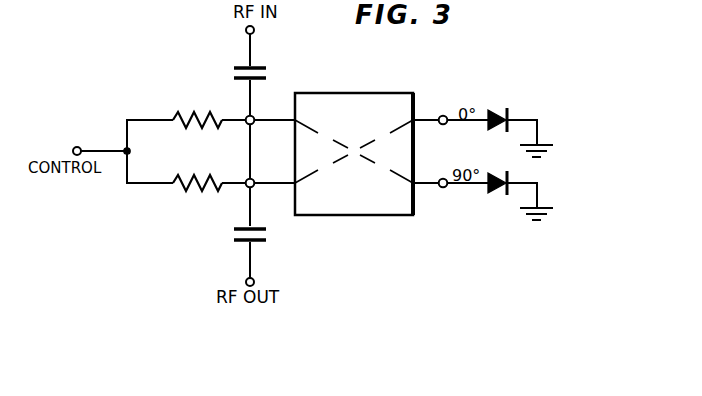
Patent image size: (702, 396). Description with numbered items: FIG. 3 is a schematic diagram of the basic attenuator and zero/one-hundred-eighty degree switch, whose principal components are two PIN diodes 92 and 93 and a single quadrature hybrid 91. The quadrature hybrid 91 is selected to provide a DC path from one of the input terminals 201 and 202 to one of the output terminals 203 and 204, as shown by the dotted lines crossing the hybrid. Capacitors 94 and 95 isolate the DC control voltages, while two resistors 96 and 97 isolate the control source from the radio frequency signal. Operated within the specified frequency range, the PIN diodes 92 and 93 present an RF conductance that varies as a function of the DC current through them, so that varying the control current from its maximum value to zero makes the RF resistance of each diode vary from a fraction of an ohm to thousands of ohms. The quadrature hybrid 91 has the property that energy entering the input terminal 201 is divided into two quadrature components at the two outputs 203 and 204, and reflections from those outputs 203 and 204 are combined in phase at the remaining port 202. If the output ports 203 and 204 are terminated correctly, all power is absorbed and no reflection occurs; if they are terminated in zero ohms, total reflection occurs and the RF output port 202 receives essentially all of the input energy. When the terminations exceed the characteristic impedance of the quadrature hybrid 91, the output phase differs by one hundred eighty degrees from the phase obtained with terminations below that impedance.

The quadrature hybrid 91 is at (352, 93).
The PIN diode 92 is at (496, 114).
The PIN diode 93 is at (493, 196).
The capacitor 94 is at (238, 66).
The capacitor 95 is at (234, 240).
The resistor 96 is at (198, 188).
The resistor 97 is at (178, 112).
The input terminal 201 is at (247, 116).
The RF output port 202 is at (250, 178).
The output terminal 203 is at (443, 116).
The output terminal 204 is at (455, 200).